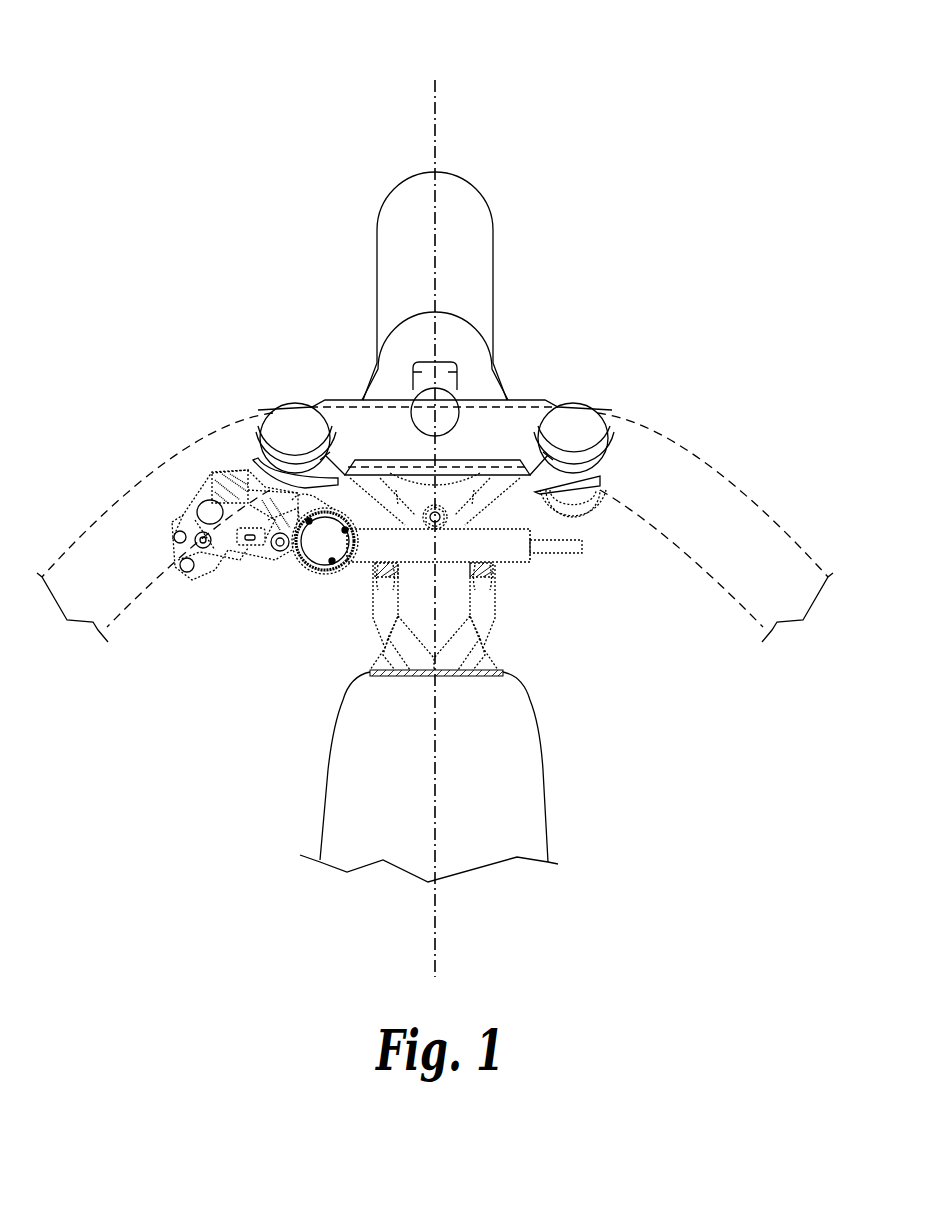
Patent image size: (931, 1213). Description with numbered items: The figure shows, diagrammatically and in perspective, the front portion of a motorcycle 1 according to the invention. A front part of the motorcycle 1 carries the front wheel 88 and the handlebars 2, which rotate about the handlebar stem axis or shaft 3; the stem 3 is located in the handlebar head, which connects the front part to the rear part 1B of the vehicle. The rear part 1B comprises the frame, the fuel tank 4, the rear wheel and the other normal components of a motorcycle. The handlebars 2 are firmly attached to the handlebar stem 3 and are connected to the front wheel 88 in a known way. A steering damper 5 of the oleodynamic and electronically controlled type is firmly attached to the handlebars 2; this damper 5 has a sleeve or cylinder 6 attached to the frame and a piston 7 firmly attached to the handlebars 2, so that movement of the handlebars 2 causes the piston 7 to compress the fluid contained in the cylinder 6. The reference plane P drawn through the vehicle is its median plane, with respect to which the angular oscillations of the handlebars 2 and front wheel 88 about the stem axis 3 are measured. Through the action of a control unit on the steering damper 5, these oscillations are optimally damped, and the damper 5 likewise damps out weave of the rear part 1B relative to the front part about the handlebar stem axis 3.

The motorcycle 1 is at (608, 120).
The rear part 1B is at (283, 187).
The handlebars 2 is at (706, 464).
The handlebar stem axis or shaft 3 is at (447, 402).
The fuel tank 4 is at (512, 765).
The steering damper 5 is at (361, 566).
The sleeve or cylinder 6 is at (513, 553).
The piston 7 is at (570, 547).
The front wheel 88 is at (475, 225).
The reference plane P is at (435, 110).